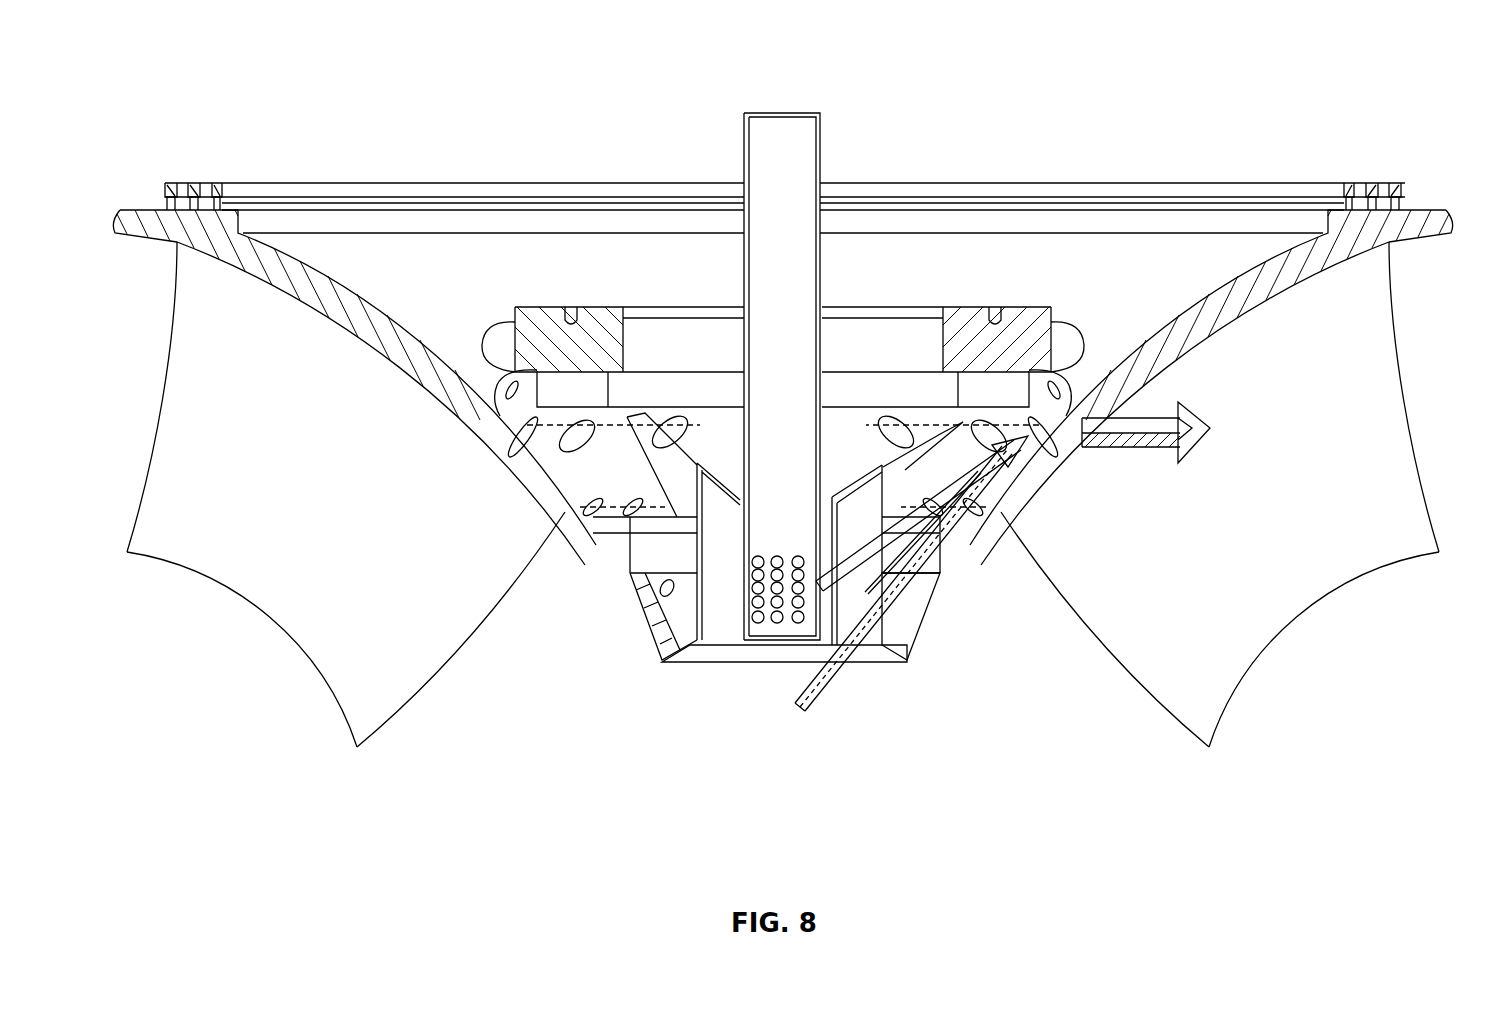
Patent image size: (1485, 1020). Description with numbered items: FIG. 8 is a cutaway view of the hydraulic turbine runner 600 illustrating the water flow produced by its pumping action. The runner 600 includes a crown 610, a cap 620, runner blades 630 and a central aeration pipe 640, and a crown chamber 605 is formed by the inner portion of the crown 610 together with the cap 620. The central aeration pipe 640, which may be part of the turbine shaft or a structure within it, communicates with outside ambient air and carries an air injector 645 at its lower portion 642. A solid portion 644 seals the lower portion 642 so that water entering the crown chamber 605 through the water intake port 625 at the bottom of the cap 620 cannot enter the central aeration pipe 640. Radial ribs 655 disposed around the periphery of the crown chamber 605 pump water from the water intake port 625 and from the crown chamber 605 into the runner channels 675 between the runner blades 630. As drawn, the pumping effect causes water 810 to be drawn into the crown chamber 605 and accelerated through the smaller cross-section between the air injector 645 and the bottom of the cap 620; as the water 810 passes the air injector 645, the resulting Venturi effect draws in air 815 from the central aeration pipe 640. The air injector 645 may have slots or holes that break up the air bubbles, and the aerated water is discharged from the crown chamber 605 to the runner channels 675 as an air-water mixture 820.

The hydraulic turbine runner 600 is at (221, 56).
The crown chamber 605 is at (605, 474).
The crown 610 is at (549, 232).
The cap 620 is at (906, 661).
The water intake port 625 is at (755, 673).
The runner blades 630 is at (346, 497).
The central aeration pipe 640 is at (704, 413).
The lower portion of the central aeration pipe 642 is at (744, 612).
The solid portion 644 is at (798, 645).
The air injector 645 is at (758, 580).
The radial ribs 655 is at (738, 545).
The runner channels 675 is at (263, 655).
The water 810 is at (850, 690).
The air 815 is at (1012, 484).
The air-water mixture 820 is at (1214, 403).